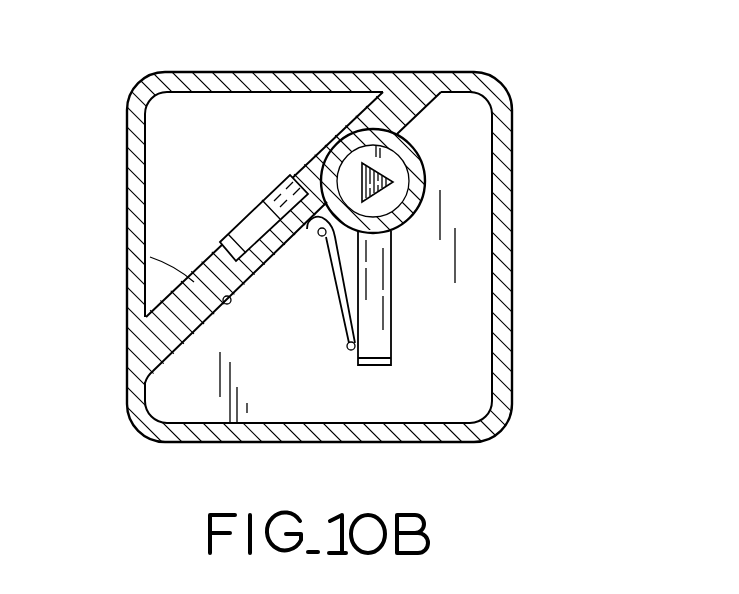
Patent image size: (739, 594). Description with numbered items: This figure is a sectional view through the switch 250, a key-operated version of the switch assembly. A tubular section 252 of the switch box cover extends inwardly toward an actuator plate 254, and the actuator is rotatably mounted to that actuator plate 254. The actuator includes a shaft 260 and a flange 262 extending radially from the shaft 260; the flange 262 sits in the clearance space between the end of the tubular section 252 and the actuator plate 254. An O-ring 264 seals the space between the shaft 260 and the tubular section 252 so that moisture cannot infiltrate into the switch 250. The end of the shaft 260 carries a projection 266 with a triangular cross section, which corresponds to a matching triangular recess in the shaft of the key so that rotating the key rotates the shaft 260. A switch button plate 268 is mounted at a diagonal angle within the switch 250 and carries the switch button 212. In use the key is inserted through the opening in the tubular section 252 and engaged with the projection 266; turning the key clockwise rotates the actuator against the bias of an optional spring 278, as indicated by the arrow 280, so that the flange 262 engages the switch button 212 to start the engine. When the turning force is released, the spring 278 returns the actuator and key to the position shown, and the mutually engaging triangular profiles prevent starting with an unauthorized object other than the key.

The switch 250 is at (575, 82).
The tubular section 252 is at (393, 182).
The actuator plate 254 is at (433, 349).
The shaft 260 is at (392, 162).
The flange 262 is at (389, 280).
The O-ring 264 is at (328, 163).
The projection 266 is at (427, 189).
The switch button plate 268 is at (150, 257).
The switch button 212 is at (272, 220).
The spring 278 is at (341, 297).
The arrow 280 is at (296, 331).